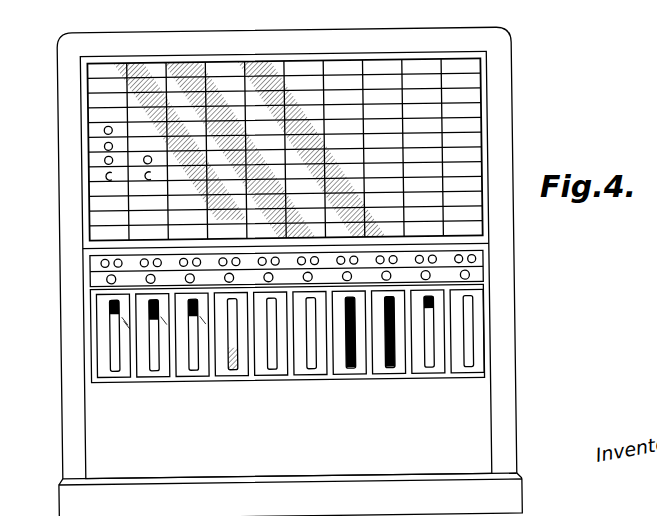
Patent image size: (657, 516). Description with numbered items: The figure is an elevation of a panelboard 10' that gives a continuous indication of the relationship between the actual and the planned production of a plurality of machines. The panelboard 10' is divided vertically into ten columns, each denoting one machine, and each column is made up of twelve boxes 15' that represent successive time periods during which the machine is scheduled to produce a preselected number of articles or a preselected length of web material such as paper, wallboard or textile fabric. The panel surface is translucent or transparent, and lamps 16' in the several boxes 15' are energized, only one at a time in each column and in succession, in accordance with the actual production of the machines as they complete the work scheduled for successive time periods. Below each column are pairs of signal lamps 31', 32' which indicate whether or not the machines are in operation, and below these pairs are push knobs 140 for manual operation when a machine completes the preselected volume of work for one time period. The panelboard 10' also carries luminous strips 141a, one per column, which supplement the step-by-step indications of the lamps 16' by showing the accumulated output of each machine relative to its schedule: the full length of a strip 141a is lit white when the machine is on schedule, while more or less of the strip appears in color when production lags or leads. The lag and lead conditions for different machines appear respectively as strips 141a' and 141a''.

The panelboard 10' is at (270, 271).
The boxes 15' is at (254, 149).
The lamps 16' is at (92, 154).
The signal lamp 31' is at (248, 256).
The signal lamp 32' is at (251, 268).
The push knobs 140 is at (104, 281).
The luminous strips 141a is at (250, 333).
The luminous strip showing lag 141a' is at (68, 311).
The luminous strip showing lead 141a'' is at (243, 380).